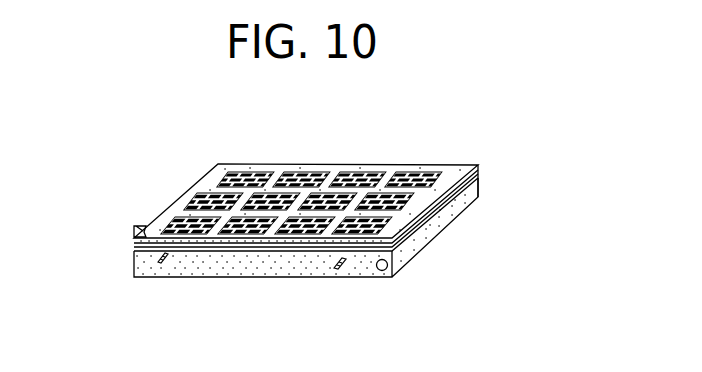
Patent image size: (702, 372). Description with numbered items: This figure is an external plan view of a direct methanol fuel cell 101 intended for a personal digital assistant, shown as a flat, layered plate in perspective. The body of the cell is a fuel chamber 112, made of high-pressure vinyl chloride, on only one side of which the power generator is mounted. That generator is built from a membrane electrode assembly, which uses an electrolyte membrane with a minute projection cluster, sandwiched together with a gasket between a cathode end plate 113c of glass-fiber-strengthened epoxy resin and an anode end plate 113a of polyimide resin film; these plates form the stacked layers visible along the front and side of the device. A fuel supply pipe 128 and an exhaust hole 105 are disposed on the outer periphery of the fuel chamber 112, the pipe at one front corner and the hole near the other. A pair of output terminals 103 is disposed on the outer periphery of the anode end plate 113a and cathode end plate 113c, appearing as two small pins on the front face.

The solar cell module 101 is at (455, 165).
The output terminals 103 is at (160, 264).
The exhaust hole 105 is at (388, 265).
The fuel chamber 112 is at (438, 220).
The anode end plate 113a is at (134, 263).
The cathode end plate 113c is at (133, 246).
The fuel supply pipe 128 is at (140, 226).